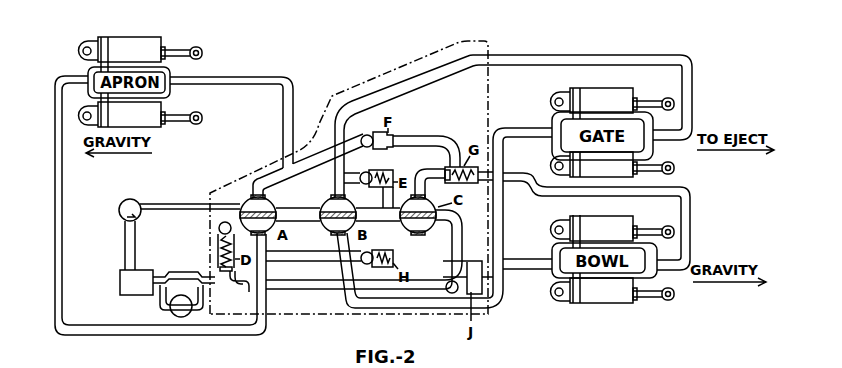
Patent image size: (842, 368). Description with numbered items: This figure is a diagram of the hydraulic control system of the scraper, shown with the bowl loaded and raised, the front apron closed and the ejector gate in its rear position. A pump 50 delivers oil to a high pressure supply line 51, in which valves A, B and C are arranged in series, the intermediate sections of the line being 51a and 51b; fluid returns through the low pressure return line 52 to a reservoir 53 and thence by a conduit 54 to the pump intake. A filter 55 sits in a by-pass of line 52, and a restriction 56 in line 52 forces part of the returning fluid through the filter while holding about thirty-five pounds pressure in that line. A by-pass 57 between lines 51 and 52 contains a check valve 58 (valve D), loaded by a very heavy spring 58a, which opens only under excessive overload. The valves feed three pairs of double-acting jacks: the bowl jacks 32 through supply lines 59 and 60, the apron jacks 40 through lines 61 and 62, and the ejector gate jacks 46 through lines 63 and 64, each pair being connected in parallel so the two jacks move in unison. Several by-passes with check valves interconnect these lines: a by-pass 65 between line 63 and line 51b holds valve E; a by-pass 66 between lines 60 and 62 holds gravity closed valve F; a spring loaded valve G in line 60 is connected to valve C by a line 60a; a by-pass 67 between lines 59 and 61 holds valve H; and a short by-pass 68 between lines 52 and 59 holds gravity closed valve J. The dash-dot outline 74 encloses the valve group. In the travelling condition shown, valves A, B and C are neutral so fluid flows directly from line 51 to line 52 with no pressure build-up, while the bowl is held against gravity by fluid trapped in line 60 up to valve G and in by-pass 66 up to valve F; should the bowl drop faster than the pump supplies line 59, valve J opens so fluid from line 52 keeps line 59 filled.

The jacks 32 is at (628, 227).
The jacks 40 is at (152, 43).
The jacks 46 is at (633, 95).
The pump 50 is at (128, 199).
The high pressure supply line 51 is at (182, 204).
The line 51a is at (298, 208).
The line 51b is at (392, 221).
The low pressure return line 52 is at (463, 233).
The reservoir 53 is at (120, 283).
The conduit 54 is at (125, 238).
The filter 55 is at (182, 318).
The restriction 56 is at (183, 261).
The by-pass 57 is at (240, 291).
The check valve 58 is at (219, 231).
The spring 58a is at (216, 248).
The supply line 59 is at (527, 270).
The supply line 60 is at (690, 211).
The line 60a is at (436, 174).
The supply line 61 is at (55, 181).
The supply line 62 is at (271, 77).
The supply line 63 is at (602, 56).
The supply line 64 is at (518, 128).
The by-pass 65 is at (356, 178).
The by-pass 66 is at (334, 128).
The by-pass 67 is at (312, 256).
The by-pass 68 is at (480, 279).
The valve block 74 is at (357, 82).